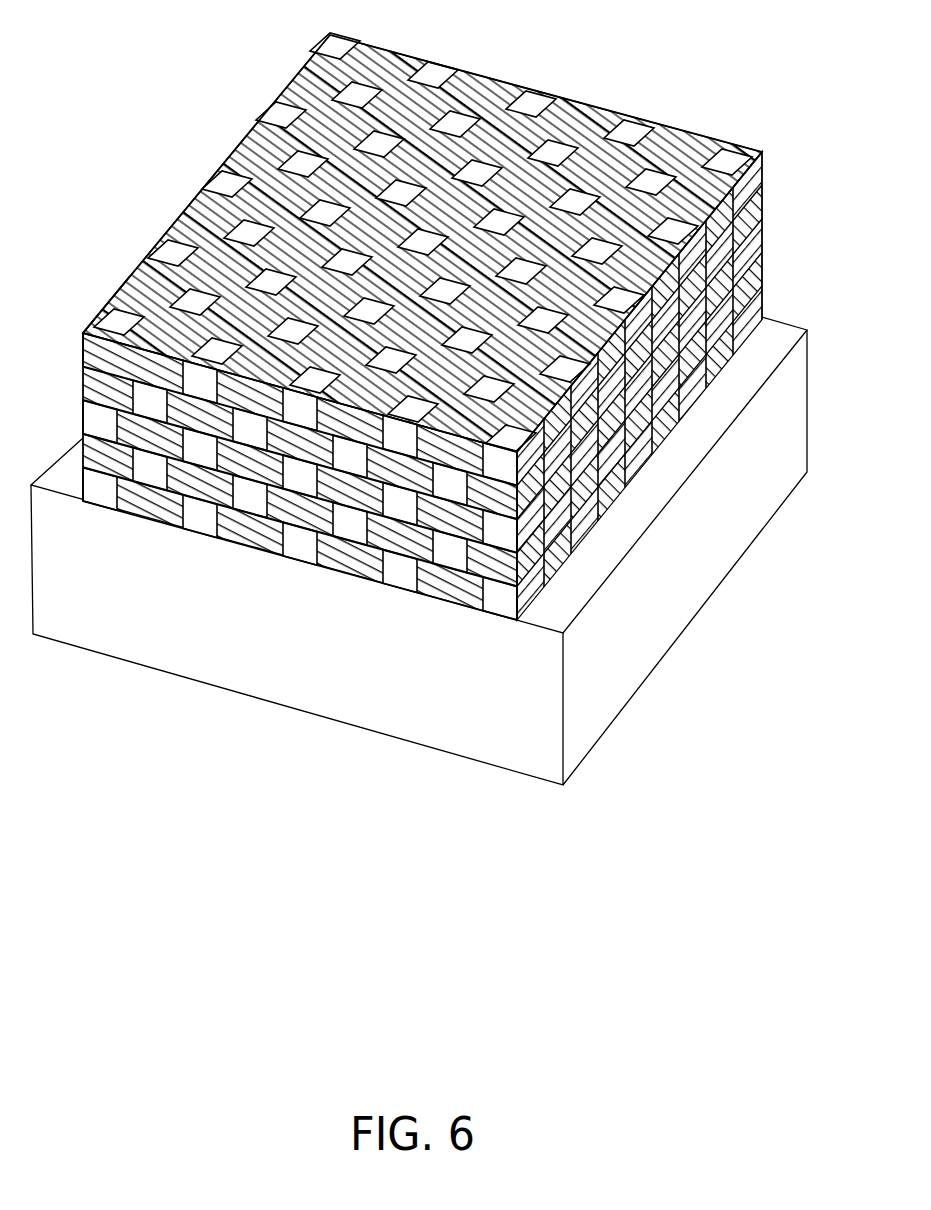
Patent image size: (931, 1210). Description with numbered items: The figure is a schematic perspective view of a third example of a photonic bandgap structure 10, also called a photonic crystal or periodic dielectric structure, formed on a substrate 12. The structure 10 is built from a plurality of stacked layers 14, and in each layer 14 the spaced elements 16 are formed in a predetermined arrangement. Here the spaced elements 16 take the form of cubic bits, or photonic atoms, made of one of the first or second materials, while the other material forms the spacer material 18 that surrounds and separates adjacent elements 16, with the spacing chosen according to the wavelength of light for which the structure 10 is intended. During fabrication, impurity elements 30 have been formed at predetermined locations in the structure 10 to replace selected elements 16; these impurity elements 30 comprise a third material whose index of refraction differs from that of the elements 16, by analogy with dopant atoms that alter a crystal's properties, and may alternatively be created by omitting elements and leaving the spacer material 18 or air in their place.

The photonic bandgap structure 10 is at (445, 399).
The substrate 12 is at (104, 591).
The stacked layers 14 is at (453, 321).
The spaced elements 16 is at (537, 100).
The spacer material 18 is at (487, 92).
The impurity elements 30 is at (95, 318).